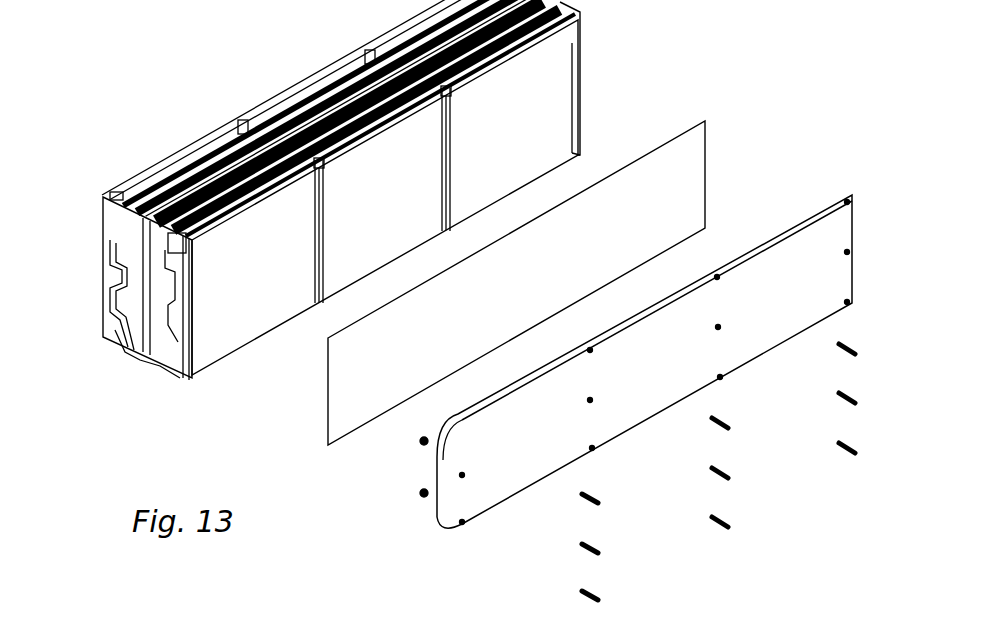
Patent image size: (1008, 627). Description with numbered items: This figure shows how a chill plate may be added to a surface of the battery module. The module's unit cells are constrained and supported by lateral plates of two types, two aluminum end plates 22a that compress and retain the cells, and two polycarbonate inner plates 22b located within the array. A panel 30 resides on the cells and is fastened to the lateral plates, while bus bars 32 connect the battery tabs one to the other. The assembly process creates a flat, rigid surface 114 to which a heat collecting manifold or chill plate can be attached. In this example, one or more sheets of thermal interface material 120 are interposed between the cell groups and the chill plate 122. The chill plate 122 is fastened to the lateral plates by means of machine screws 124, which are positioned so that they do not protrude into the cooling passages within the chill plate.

The panel 30 is at (292, 107).
The bus bars 32 is at (350, 70).
The aluminum end plates 22a is at (577, 57).
The polycarbonate inner plates 22b is at (450, 132).
The flat, rigid surface 114 is at (272, 298).
The thermal interface material 120 is at (358, 373).
The chill plate 122 is at (458, 507).
The machine screws 124 is at (737, 487).